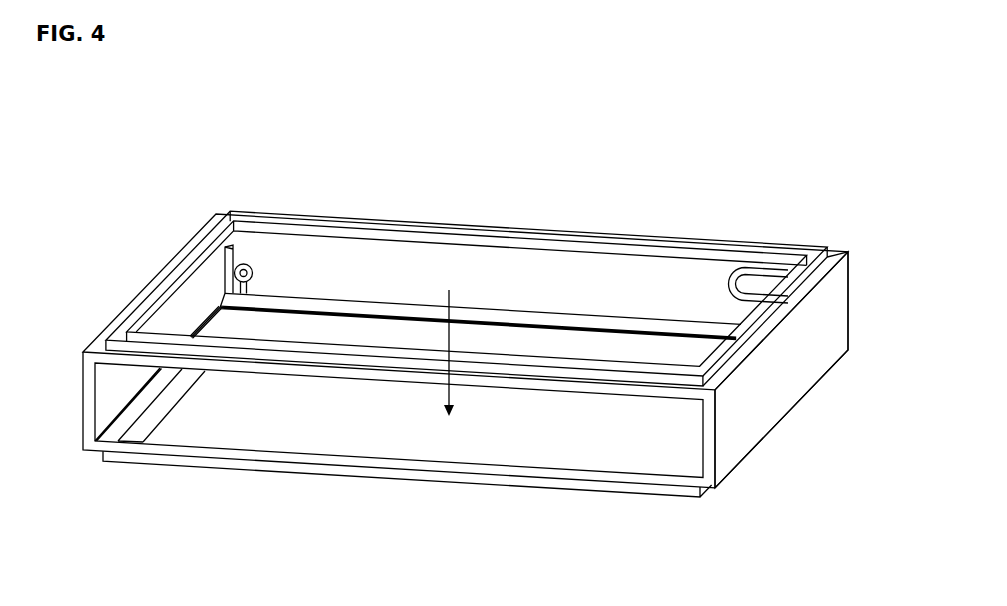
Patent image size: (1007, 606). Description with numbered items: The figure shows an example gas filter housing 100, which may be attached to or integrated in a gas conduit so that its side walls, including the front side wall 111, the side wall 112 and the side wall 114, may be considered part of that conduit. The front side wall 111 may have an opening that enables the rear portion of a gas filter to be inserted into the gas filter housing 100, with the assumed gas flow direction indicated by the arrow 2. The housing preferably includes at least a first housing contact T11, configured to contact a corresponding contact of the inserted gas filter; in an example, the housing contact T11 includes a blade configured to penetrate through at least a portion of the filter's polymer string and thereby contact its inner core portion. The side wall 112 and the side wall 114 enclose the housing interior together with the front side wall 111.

The gas filter housing 100 is at (128, 174).
The front side wall 111 is at (457, 472).
The side wall 112 is at (402, 268).
The side wall 114 is at (748, 398).
The first housing contact T11 is at (247, 264).
The arrow 2 is at (445, 353).